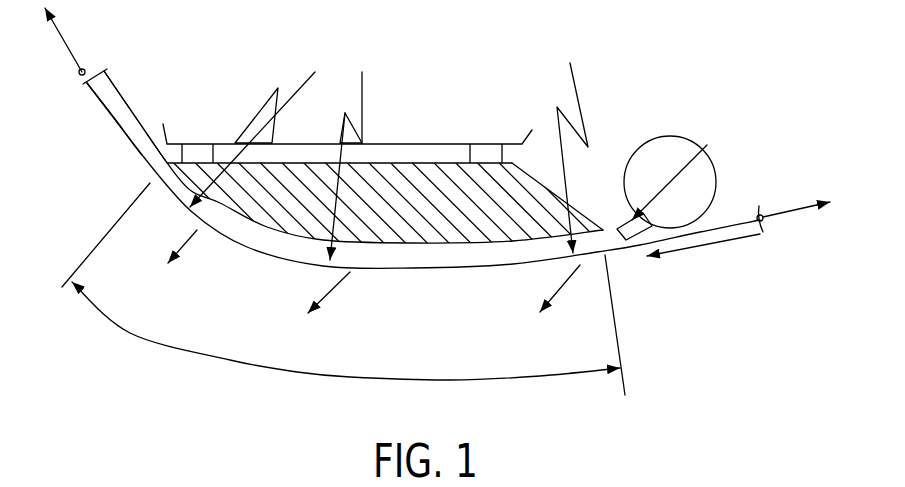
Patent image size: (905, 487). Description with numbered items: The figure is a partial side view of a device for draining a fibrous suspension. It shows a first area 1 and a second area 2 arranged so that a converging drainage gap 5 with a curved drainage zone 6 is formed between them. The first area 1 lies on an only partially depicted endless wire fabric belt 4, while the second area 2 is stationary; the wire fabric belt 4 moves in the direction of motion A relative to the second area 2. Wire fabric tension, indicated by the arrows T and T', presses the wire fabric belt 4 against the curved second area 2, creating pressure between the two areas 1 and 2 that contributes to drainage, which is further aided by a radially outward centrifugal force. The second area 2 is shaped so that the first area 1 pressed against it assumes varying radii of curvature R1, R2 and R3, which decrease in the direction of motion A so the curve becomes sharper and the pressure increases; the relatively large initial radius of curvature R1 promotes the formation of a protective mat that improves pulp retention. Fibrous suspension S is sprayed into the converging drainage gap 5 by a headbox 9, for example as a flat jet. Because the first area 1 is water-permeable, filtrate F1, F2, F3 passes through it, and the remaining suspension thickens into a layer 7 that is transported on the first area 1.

The first area 1 is at (423, 265).
The second area 2 is at (410, 243).
The wire fabric belt 4 is at (743, 222).
The converging drainage gap 5 is at (530, 255).
The curved drainage zone 6 is at (307, 375).
The layer 7 is at (122, 113).
The headbox 9 is at (653, 158).
The fibrous suspension S is at (710, 142).
The wire fabric tension T is at (71, 41).
The wire fabric tension T' is at (796, 192).
The direction of motion A is at (690, 250).
The filtrate F1 is at (562, 290).
The filtrate F2 is at (327, 297).
The filtrate F3 is at (186, 247).
The radius of curvature R1 is at (557, 124).
The radius of curvature R2 is at (362, 95).
The radius of curvature R3 is at (306, 83).